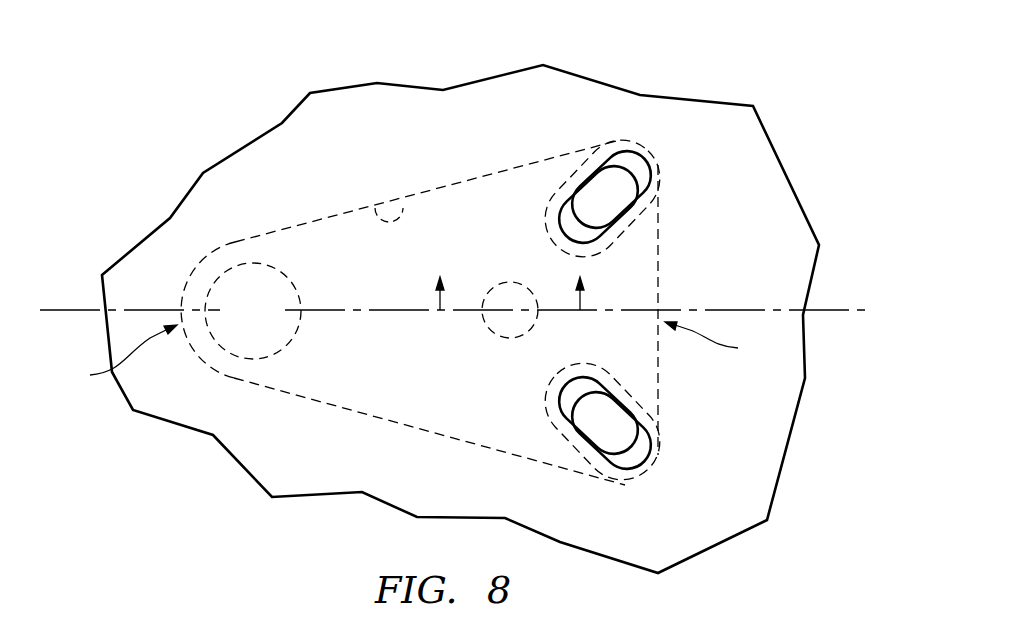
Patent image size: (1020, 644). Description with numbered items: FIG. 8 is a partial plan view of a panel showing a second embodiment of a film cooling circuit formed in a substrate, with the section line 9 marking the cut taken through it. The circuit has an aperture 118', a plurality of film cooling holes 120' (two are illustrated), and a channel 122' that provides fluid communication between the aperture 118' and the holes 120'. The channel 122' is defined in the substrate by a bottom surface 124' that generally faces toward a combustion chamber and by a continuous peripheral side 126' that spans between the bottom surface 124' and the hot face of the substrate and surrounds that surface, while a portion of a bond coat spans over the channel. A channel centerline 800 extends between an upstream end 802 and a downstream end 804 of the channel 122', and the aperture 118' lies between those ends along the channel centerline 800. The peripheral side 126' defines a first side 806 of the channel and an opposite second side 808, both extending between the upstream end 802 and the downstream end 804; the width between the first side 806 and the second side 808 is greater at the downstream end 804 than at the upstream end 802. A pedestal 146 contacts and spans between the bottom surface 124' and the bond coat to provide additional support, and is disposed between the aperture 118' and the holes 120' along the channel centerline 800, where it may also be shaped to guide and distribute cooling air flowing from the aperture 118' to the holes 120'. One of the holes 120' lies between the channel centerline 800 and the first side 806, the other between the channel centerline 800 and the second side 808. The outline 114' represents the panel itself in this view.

The mounting plate 114' is at (460, 291).
The aperture 118' is at (253, 311).
The film cooling holes 120' is at (649, 310).
The channel 122' is at (334, 323).
The bottom surface 124' is at (648, 309).
The peripheral side 126' is at (393, 169).
The pedestal 146 is at (512, 300).
The channel centerline 800 is at (853, 308).
The upstream end 802 is at (109, 360).
The downstream end 804 is at (725, 343).
The first side 806 is at (541, 160).
The second side 808 is at (540, 460).
The section line 9- 9 is at (511, 288).